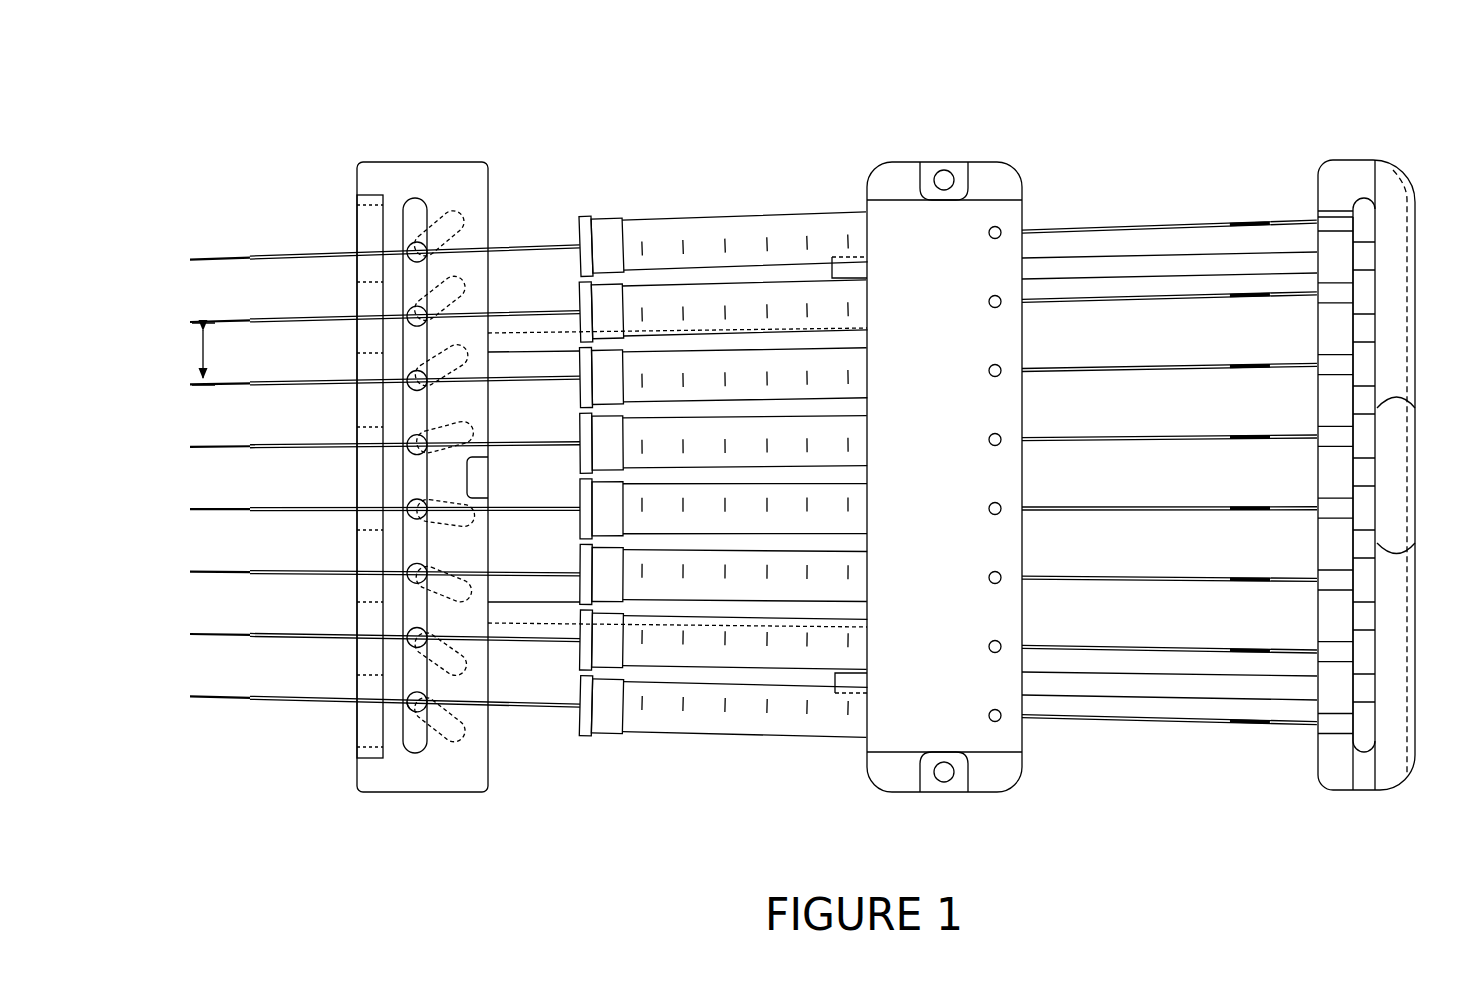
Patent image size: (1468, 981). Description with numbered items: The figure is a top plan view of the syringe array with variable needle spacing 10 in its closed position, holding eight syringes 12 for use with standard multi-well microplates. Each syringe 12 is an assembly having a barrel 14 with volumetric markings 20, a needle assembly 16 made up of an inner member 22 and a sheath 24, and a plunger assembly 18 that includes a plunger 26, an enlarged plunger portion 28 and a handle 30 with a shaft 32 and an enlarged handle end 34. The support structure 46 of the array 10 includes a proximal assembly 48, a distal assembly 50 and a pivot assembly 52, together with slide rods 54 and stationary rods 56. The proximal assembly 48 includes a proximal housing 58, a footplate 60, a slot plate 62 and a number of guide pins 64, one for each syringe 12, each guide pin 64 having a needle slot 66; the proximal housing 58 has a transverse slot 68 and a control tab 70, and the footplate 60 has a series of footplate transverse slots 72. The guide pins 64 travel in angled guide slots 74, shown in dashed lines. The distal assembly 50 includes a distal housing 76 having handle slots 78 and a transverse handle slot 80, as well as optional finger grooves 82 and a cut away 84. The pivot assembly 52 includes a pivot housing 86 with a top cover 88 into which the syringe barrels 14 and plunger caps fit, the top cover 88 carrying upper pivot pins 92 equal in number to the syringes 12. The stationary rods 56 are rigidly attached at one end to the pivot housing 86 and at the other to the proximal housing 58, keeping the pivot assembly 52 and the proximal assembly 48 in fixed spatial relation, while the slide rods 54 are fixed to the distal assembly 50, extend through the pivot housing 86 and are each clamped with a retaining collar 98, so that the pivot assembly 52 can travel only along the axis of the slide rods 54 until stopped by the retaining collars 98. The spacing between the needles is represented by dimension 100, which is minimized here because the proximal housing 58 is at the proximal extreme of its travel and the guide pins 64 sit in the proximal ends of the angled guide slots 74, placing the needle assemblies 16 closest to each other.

The syringe array with variable needle spacing 10 is at (372, 122).
The syringe 12 is at (681, 207).
The barrel 14 is at (628, 222).
The needle assembly 16 is at (503, 240).
The plunger assembly 18 is at (1162, 202).
The volumetric markings 20 is at (722, 233).
The inner member 22 is at (228, 258).
The sheath 24 is at (310, 255).
The plunger 26 is at (1118, 228).
The enlarged plunger portion 28 is at (1235, 222).
The handle 30 is at (1340, 194).
The shaft 32 is at (1335, 228).
The enlarged handle end 34 is at (1362, 208).
The support structure 46 is at (1237, 750).
The proximal assembly 48 is at (348, 795).
The distal assembly 50 is at (1335, 807).
The pivot assembly 52 is at (916, 801).
The slide rods 54 is at (1150, 264).
The stationary rods 56 is at (568, 338).
The proximal housing 58 is at (470, 763).
The footplate 60 is at (362, 753).
The slot plate 62 is at (420, 748).
The guide pins 64 is at (418, 708).
The needle slot 66 is at (404, 710).
The transverse slot 68 is at (425, 540).
The control tab 70 is at (482, 470).
The footplate transverse slots 72 is at (371, 192).
The guide slots 74 is at (467, 728).
The distal housing 76 is at (1328, 766).
The handle slots 78 is at (1333, 319).
The transverse handle slot 80 is at (1360, 408).
The finger grooves 82 is at (1416, 217).
The cut away 84 is at (1402, 425).
The pivot housing 86 is at (878, 766).
The top cover 88 is at (895, 646).
The upper pivot pins 92 is at (990, 373).
The retaining collar 98 is at (850, 696).
The dimension 100 is at (223, 357).